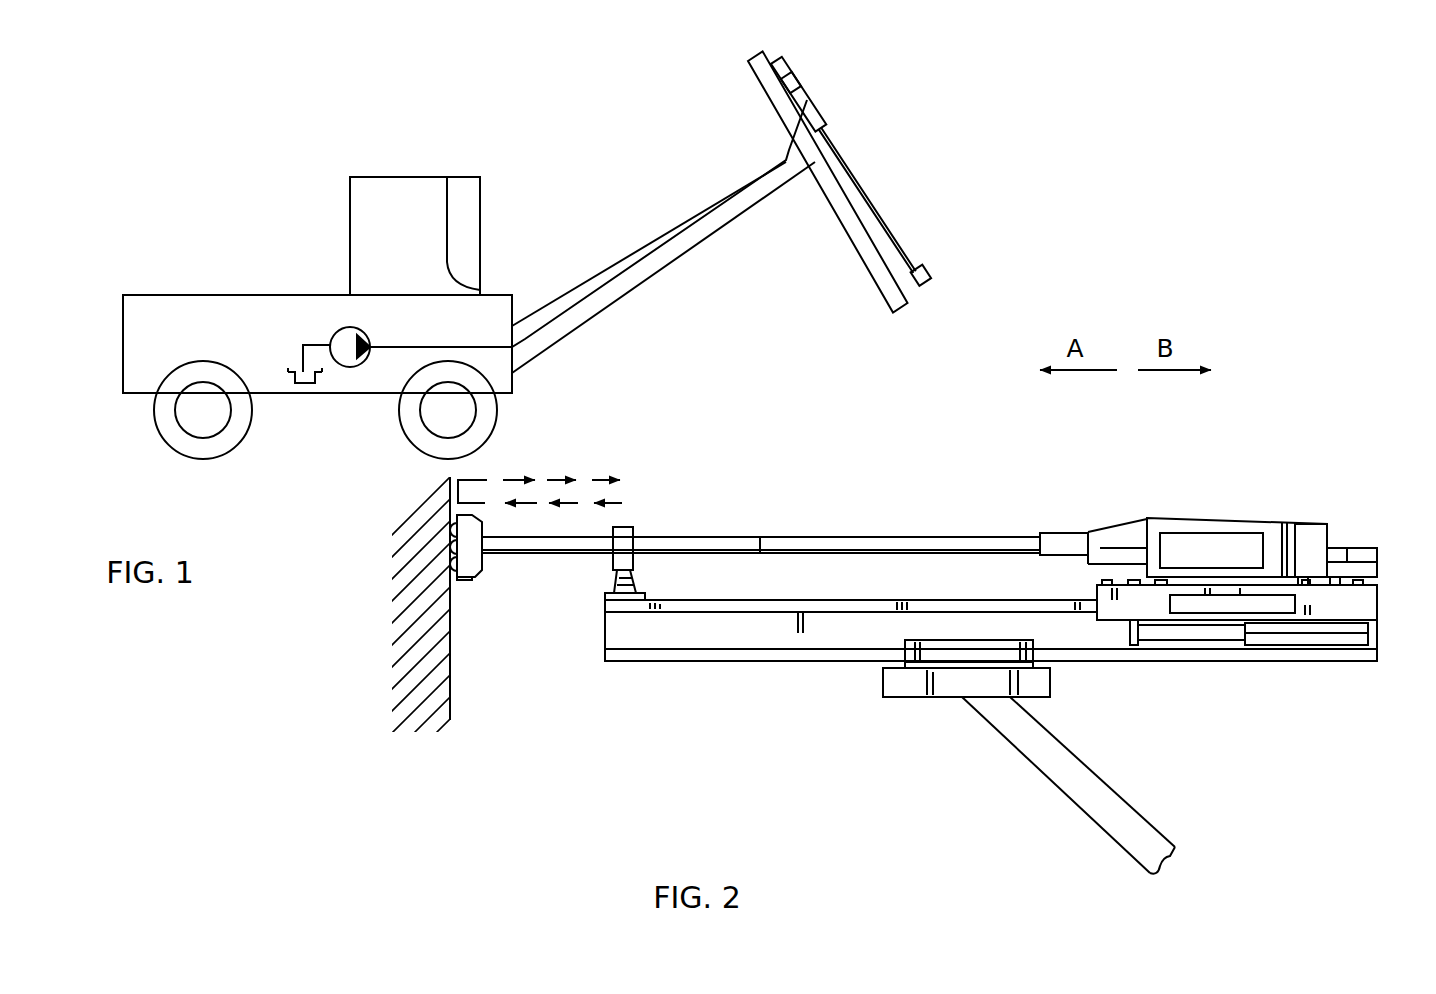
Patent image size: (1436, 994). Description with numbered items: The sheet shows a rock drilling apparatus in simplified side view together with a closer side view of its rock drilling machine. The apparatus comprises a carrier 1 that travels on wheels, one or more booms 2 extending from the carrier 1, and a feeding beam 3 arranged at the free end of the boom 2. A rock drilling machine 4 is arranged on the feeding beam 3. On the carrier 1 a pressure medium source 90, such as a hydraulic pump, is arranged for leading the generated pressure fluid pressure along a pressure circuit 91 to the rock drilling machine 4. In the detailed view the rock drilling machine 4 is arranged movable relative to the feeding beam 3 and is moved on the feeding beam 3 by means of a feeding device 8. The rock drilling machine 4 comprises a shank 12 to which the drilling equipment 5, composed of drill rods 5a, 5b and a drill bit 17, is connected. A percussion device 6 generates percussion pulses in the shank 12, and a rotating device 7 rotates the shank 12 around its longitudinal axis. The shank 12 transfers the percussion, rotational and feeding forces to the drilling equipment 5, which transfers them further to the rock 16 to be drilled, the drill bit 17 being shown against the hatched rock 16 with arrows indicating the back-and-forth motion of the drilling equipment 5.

In FIG. 1, the carrier 1 is at (263, 313).
In FIG. 1, the boom 2 is at (637, 258).
In FIG. 2, the boom 2 is at (1097, 805).
In FIG. 1, the feeding beam 3 is at (848, 200).
In FIG. 2, the feeding beam 3 is at (682, 638).
In FIG. 1, the rock drilling machine 4 is at (750, 97).
In FIG. 2, the rock drilling machine 4 is at (1192, 494).
In FIG. 1, the drilling equipment 5 is at (918, 220).
In FIG. 2, the drilling equipment 5 is at (825, 437).
In FIG. 2, the drill rod 5a is at (693, 542).
In FIG. 2, the drill rod 5b is at (848, 542).
In FIG. 1, the percussion device 6 is at (822, 120).
In FIG. 2, the percussion device 6 is at (1302, 543).
In FIG. 1, the rotating device 7 is at (797, 73).
In FIG. 2, the rotating device 7 is at (1205, 547).
In FIG. 2, the feeding device 8 is at (1293, 633).
In FIG. 2, the shank 12 is at (1052, 540).
In FIG. 2, the rock 16 is at (428, 678).
In FIG. 2, the drill bit 17 is at (473, 557).
In FIG. 1, the pressure medium source 90 is at (348, 355).
In FIG. 1, the pressure circuit 91 is at (390, 347).